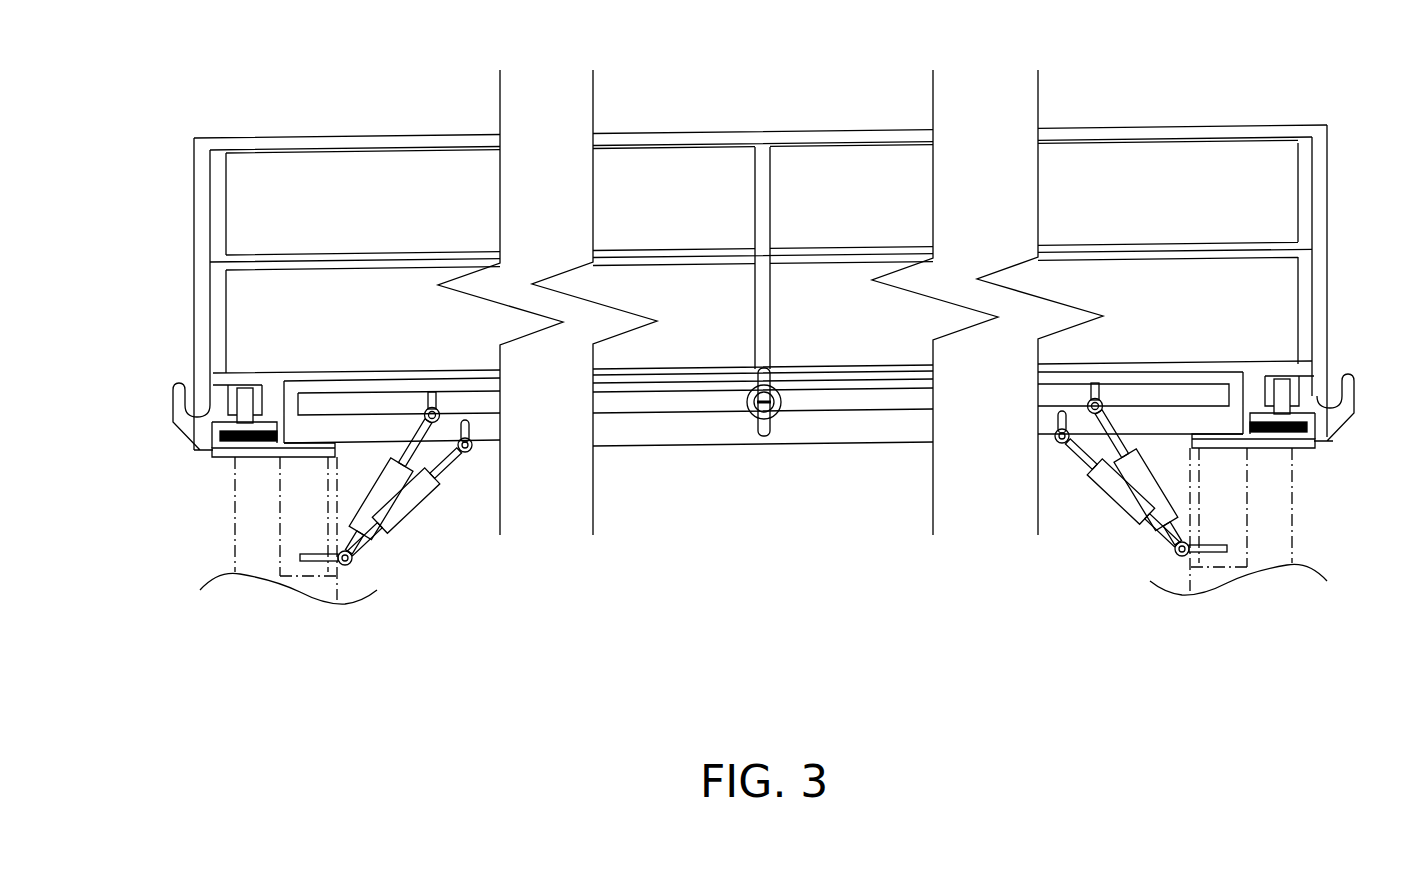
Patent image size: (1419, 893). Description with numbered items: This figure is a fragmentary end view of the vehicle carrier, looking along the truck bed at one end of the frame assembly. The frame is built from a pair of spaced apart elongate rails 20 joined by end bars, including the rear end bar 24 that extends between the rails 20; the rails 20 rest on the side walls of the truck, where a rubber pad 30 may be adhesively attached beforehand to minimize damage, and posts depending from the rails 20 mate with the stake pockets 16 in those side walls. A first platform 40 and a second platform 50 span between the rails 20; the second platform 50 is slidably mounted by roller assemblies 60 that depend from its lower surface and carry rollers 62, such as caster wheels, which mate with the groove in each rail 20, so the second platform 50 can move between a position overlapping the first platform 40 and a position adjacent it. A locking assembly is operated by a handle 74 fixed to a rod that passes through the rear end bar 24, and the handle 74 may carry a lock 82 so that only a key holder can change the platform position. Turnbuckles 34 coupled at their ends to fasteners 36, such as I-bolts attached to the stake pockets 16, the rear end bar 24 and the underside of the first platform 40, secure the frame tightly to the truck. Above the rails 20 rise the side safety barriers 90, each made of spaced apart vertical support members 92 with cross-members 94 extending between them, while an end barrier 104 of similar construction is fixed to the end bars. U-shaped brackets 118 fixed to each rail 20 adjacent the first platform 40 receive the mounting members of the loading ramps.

The stake pocket 16 is at (288, 568).
The rail 20 is at (250, 458).
The rear end bar 24 is at (852, 443).
The pad 30 is at (211, 457).
The turnbuckle 34 is at (415, 520).
The fastener 36 is at (466, 455).
The first platform 40 is at (368, 383).
The second platform 50 is at (420, 375).
The roller assembly 60 is at (258, 405).
The roller 62 is at (247, 383).
The handle 74 is at (767, 423).
The lock 82 is at (762, 401).
The side safety barrier 90 is at (183, 138).
The vertical support member 92 is at (772, 208).
The cross-member 94 is at (314, 255).
The end barrier 104 is at (718, 117).
The U-shaped bracket 118 is at (175, 408).